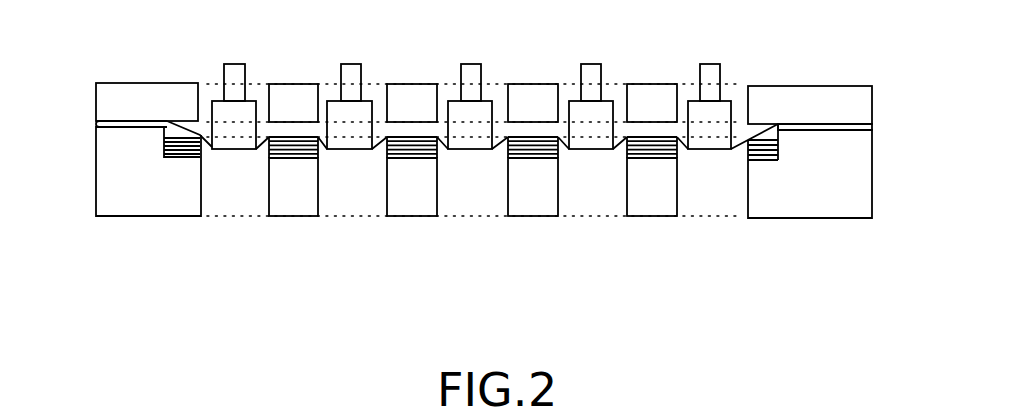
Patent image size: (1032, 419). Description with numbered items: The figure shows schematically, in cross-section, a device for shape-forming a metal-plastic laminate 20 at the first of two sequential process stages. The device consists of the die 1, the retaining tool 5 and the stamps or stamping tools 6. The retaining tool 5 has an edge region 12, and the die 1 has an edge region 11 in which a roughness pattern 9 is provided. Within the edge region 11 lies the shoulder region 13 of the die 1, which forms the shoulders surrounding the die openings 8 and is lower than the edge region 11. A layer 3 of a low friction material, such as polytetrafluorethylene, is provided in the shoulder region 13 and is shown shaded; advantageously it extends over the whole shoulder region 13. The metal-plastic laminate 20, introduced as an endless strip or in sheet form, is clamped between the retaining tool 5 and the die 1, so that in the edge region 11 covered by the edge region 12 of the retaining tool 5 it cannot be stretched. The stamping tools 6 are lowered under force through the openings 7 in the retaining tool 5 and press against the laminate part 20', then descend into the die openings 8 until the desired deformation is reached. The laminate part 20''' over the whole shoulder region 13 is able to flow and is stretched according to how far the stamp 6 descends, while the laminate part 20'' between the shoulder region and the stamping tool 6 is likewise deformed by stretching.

The die 1 is at (130, 167).
The layer 3 is at (635, 160).
The retaining tool 5 is at (130, 100).
The stamps (stamping tools) 6 is at (712, 78).
The openings in the retaining tool 7 is at (683, 113).
The openings in the die 8 is at (717, 190).
The roughness pattern 9 is at (871, 128).
The edge region of the die 11 is at (822, 133).
The edge region of the retaining tool 12 is at (818, 107).
The shoulder region 13 is at (664, 160).
The metal-plastic laminate 20 is at (167, 194).
The metal-plastic laminate part under the stamping tool 20' is at (585, 184).
The metal-plastic laminate part between shoulder region and stamping tool 20'' is at (236, 203).
The metal-plastic laminate part in the shoulder region 20''' is at (241, 197).